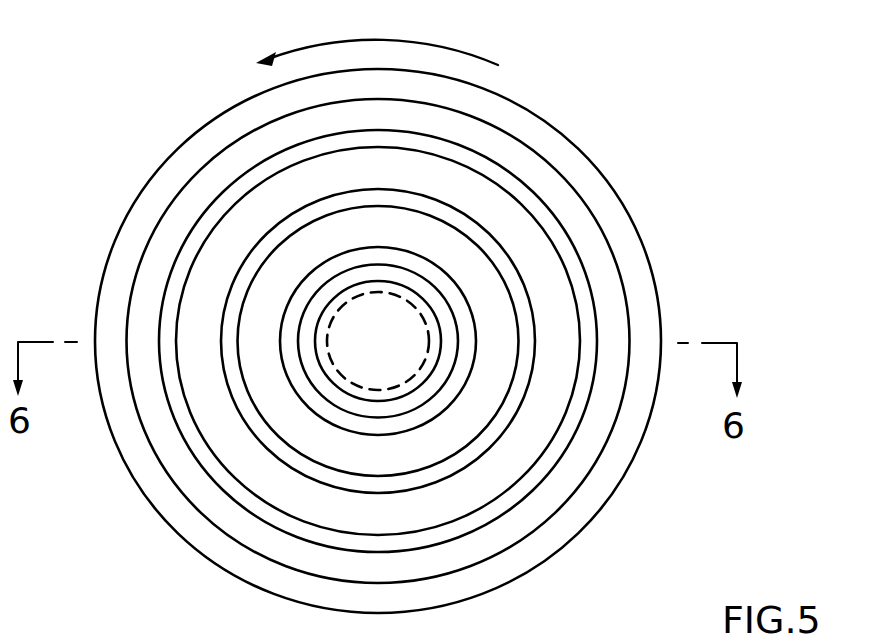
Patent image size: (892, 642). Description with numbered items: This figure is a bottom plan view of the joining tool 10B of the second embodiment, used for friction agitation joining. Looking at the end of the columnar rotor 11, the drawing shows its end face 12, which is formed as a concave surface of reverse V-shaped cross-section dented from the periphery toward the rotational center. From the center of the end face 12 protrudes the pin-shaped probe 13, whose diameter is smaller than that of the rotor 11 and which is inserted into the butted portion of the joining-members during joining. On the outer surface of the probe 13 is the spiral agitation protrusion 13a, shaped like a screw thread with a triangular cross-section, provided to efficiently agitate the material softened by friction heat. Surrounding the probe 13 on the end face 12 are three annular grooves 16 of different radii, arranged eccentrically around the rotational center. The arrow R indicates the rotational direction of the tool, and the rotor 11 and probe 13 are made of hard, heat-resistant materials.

The joining tool 10B is at (139, 173).
The rotor 11 is at (127, 218).
The end face 12 is at (556, 297).
The probe 13 is at (403, 343).
The spiral agitation protrusion 13a is at (417, 385).
The annular grooves 16 is at (425, 272).
The rotation direction R is at (423, 43).